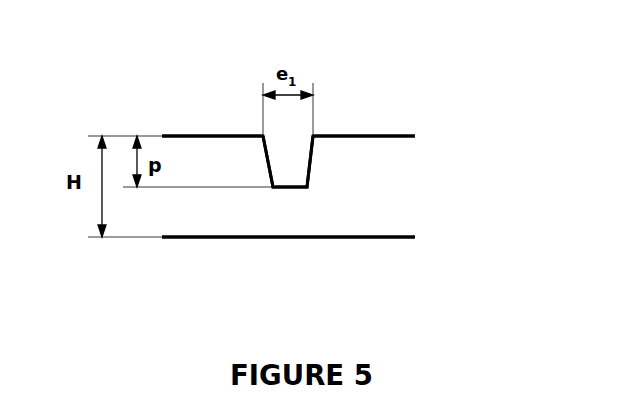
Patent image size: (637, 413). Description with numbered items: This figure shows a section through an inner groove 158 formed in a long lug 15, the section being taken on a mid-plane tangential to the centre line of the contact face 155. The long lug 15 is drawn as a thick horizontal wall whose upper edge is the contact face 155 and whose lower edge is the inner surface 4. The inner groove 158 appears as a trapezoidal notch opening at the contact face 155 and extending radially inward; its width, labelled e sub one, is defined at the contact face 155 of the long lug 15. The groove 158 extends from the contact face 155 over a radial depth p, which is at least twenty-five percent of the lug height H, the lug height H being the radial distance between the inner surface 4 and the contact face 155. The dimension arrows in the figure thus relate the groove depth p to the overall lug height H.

The long lug 15 is at (407, 205).
The contact face 155 is at (223, 135).
The inner groove 158 is at (291, 158).
The inner surface 4 is at (363, 238).